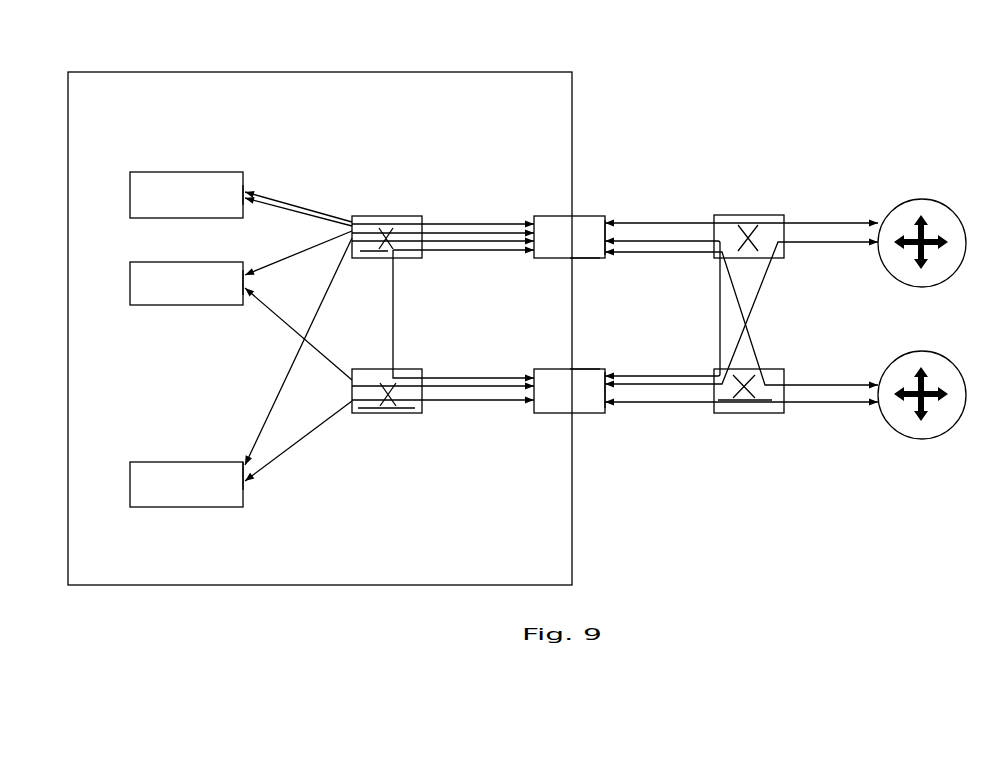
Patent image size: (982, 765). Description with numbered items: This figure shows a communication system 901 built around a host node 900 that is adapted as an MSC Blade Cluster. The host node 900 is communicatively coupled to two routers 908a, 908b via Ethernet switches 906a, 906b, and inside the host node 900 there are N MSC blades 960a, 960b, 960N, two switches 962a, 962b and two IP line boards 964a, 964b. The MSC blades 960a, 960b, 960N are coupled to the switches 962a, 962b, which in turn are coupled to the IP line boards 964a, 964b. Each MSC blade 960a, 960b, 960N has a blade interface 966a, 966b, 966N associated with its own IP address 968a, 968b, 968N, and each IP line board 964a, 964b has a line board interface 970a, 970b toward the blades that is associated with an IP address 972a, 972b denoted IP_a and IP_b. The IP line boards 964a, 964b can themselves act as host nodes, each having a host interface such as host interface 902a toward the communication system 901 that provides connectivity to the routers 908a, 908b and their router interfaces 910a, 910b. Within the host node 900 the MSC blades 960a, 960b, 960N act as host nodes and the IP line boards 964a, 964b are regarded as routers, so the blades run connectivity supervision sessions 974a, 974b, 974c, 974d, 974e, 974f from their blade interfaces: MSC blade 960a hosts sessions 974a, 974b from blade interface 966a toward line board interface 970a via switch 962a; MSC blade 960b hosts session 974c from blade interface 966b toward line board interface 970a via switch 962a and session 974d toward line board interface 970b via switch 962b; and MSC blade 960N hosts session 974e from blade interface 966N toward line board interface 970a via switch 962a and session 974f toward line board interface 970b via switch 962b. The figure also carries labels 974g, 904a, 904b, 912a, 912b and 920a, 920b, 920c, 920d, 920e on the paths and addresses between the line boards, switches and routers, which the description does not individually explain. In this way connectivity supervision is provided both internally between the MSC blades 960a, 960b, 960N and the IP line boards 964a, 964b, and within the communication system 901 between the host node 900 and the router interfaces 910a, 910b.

The host node 900 is at (518, 72).
The communication system 901 is at (850, 53).
The MSC blade 960a is at (152, 172).
The MSC blade 960b is at (135, 262).
The MSC blade 960N is at (143, 462).
The blade interface 966a is at (245, 177).
The blade interface 966b is at (245, 305).
The blade interface 966N is at (243, 507).
The IP address 968a is at (287, 180).
The IP address 968b is at (250, 250).
The IP address 968N is at (290, 506).
The connectivity supervision session 974a is at (340, 210).
The connectivity supervision session 974b is at (297, 210).
The connectivity supervision session 974c is at (282, 263).
The connectivity supervision session 974d is at (305, 340).
The connectivity supervision session 974e is at (275, 400).
The connectivity supervision session 974f is at (313, 430).
The data paths 974g is at (475, 378).
The switch 962a is at (425, 215).
The switch 962b is at (408, 413).
The IP address 972a is at (510, 193).
The IP address 972b is at (488, 415).
The line board interface 970a is at (540, 215).
The line board interface 970b is at (533, 413).
The IP line board 964a is at (582, 258).
The IP line board 964b is at (578, 369).
The host interface 902a is at (612, 215).
The IP address IP_A 904a is at (653, 195).
The IP address IP_B 904b is at (655, 412).
The Ethernet switch 906a is at (760, 215).
The Ethernet switch 906b is at (748, 413).
The link 920a is at (697, 222).
The link 920b is at (820, 385).
The link 920c is at (812, 243).
The link 920d is at (790, 404).
The link 920e is at (718, 288).
The IP address IP_R 912a is at (838, 205).
The IP address IP_S 912b is at (842, 430).
The router interface 910a is at (877, 217).
The router interface 910b is at (877, 404).
The router 908a is at (935, 200).
The router 908b is at (922, 440).